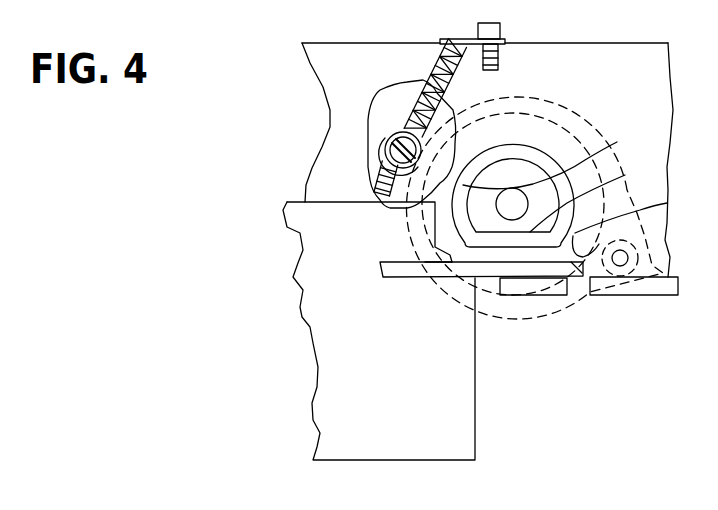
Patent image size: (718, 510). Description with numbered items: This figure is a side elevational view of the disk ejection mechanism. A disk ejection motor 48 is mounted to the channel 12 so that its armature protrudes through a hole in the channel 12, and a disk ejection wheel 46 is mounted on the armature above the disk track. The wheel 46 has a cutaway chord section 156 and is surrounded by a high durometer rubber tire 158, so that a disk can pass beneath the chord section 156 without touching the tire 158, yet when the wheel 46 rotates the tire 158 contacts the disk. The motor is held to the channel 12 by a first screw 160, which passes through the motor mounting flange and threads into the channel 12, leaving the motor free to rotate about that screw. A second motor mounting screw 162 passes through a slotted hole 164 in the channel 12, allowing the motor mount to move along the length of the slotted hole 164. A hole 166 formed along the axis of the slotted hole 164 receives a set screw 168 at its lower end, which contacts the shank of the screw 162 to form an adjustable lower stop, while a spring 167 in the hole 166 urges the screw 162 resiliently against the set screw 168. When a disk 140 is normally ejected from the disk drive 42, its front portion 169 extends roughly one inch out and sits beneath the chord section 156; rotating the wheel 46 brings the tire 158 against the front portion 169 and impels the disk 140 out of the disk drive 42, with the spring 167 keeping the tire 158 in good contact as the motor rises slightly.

The channel 12 is at (568, 66).
The disk drive 42 is at (397, 375).
The disk ejection wheel 46 is at (525, 180).
The disk ejection motor 48 is at (567, 110).
The disk 140 is at (578, 276).
The cutaway chord section 156 is at (622, 175).
The high durometer rubber tire 158 is at (613, 142).
The first screw 160 is at (640, 250).
The second motor mounting screw 162 is at (386, 152).
The slotted hole 164 is at (402, 121).
The hole 166 is at (441, 57).
The spring 167 is at (451, 77).
The set screw 168 is at (377, 183).
The front portion 169 is at (666, 203).